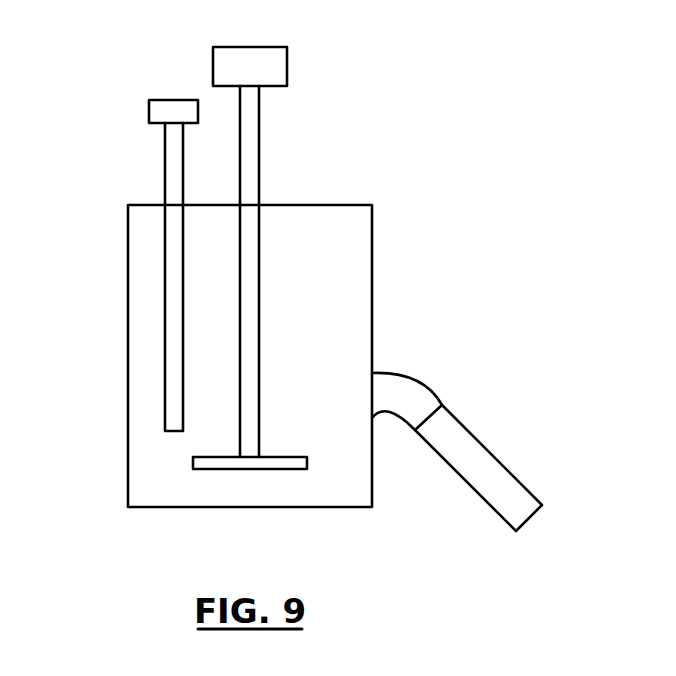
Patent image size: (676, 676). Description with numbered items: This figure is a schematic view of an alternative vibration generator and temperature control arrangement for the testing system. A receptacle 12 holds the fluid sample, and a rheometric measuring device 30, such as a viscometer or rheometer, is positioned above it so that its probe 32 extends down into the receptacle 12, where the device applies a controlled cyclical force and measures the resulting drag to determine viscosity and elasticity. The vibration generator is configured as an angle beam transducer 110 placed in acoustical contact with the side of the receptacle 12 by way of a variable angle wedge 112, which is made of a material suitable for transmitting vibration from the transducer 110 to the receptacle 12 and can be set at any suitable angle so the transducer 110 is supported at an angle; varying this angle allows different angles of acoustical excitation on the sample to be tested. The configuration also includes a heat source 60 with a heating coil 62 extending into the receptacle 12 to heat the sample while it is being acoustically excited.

The receptacle 12 is at (127, 344).
The rheometric measuring device 30 is at (287, 66).
The probe 32 is at (260, 153).
The heat source 60 is at (172, 98).
The heating coil 62 is at (163, 172).
The angle beam transducer 110 is at (512, 470).
The variable angle wedge 112 is at (408, 373).